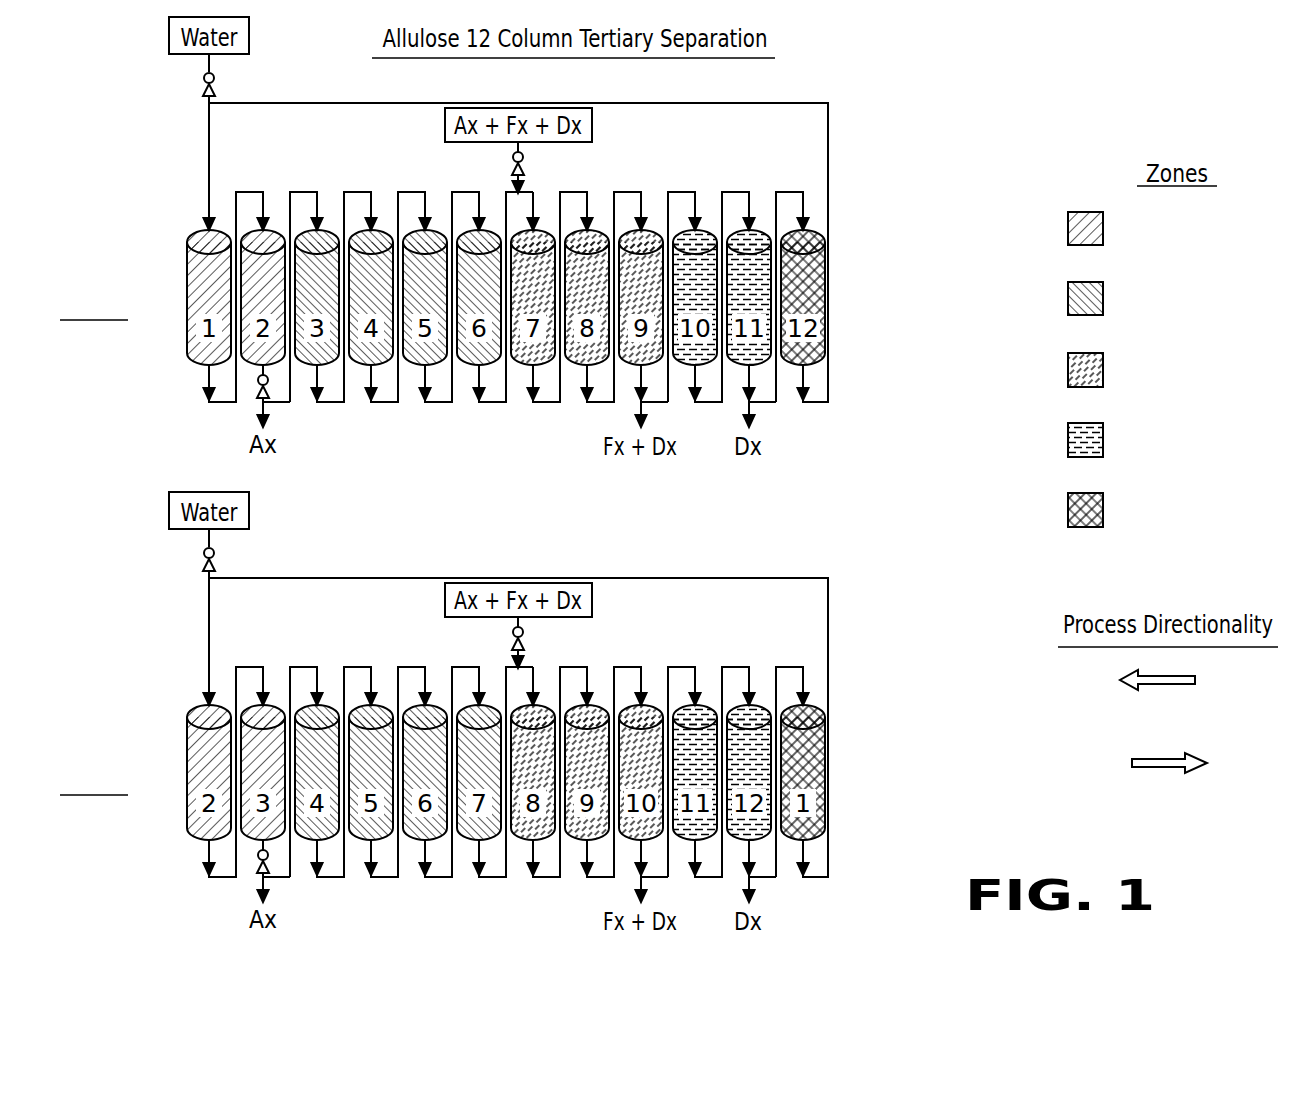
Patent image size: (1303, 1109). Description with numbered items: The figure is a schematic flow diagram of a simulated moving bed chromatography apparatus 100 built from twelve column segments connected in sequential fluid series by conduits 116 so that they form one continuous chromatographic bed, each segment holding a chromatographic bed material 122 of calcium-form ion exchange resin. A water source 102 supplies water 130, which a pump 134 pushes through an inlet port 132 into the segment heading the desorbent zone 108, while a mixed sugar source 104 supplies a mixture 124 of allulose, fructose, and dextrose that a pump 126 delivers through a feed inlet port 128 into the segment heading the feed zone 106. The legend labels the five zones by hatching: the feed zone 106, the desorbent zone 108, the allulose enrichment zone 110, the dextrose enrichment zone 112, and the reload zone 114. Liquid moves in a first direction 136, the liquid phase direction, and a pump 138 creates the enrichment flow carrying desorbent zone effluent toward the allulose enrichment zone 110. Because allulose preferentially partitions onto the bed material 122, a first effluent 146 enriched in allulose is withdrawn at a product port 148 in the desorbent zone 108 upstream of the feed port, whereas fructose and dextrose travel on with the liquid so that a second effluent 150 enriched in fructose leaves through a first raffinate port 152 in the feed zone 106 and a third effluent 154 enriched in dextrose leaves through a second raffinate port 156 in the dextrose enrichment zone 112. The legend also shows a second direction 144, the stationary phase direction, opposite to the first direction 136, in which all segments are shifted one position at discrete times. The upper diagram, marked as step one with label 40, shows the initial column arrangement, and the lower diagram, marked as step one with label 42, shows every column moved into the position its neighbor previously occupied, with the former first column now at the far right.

The simulated moving bed chromatography apparatus 100 is at (952, 133).
The water source 102 is at (171, 271).
The mixed sugar source 104 is at (483, 360).
The feed zone 106 is at (1156, 370).
The desorbent zone 108 is at (1155, 228).
The allulose enrichment zone 110 is at (1170, 299).
The dextrose enrichment zone 112 is at (1174, 441).
The reload zone 114 is at (1164, 510).
The conduits 116 is at (559, 483).
The chromatographic bed material 122 is at (465, 495).
The mixture 124 is at (463, 390).
The pump 126 is at (484, 410).
The inlet port 128 is at (565, 433).
The water 130 is at (160, 309).
The inlet port 132 is at (167, 400).
The pump 134 is at (249, 317).
The first direction 136 is at (1200, 760).
The pump 138 is at (220, 638).
The second direction 144 is at (1178, 673).
The first effluent 146 is at (216, 669).
The product port 148 is at (304, 660).
The second effluent 150 is at (602, 656).
The first raffinate port 152 is at (678, 656).
The third effluent 154 is at (793, 670).
The second raffinate port 156 is at (795, 656).
The step 1 configuration 40 is at (110, 303).
The step 1 shifted configuration 42 is at (110, 778).